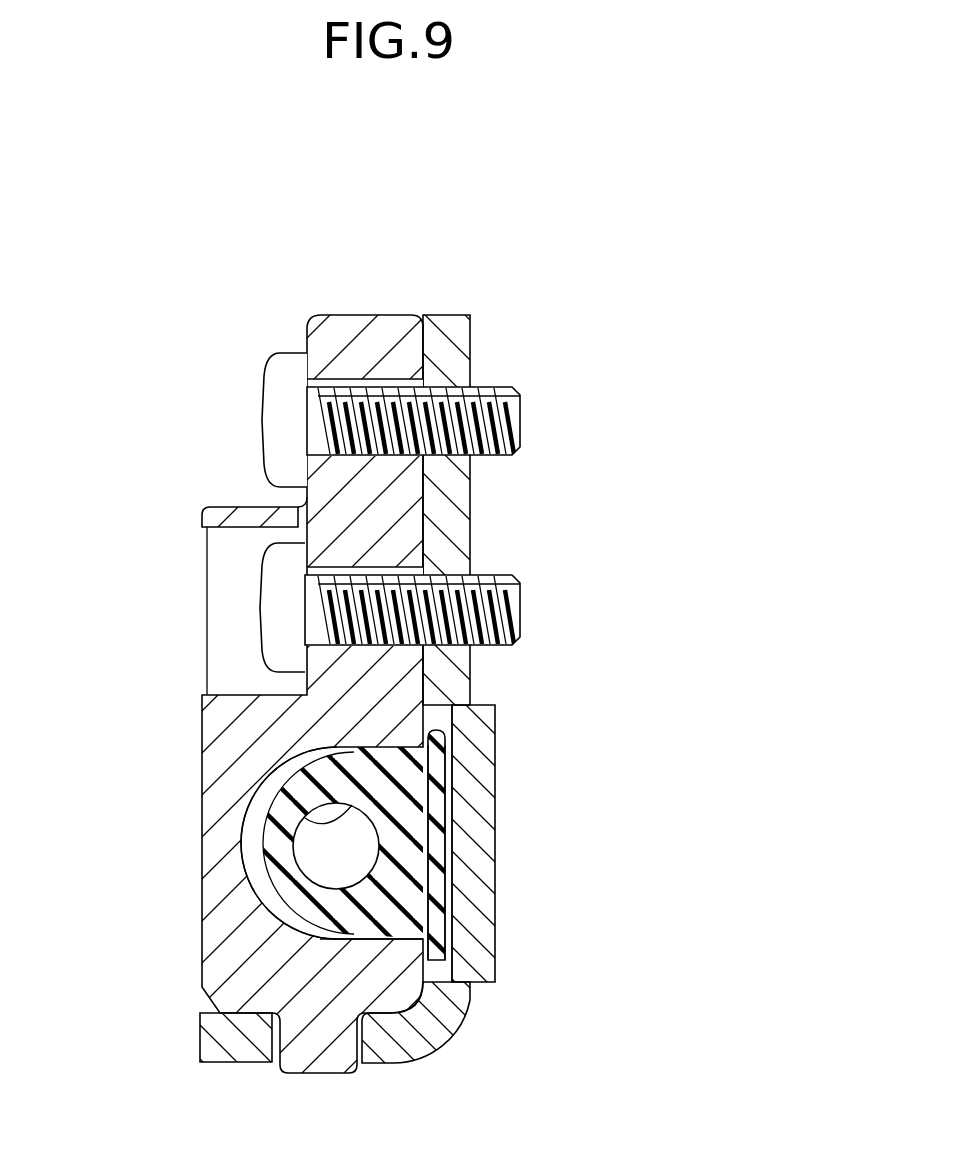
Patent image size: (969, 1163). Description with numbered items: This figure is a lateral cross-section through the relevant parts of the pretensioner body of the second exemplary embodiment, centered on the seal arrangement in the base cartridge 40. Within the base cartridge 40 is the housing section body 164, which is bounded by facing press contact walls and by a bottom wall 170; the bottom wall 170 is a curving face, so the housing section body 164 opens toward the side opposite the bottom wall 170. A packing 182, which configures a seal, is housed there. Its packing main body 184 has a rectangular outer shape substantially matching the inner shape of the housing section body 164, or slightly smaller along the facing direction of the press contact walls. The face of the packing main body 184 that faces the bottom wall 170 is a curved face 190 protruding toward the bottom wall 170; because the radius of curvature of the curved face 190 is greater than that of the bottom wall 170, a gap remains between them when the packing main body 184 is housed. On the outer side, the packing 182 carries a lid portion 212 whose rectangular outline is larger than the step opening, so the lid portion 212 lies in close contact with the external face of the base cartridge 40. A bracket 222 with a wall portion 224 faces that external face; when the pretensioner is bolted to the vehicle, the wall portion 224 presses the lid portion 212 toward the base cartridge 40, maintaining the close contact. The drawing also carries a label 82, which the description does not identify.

The base cartridge 40 is at (373, 312).
The support portion 82 is at (305, 807).
The bottom wall 170 is at (240, 820).
The curved face 190 is at (258, 853).
The packing main body 184 is at (340, 942).
The housing section body 164 is at (364, 929).
The packing 182 is at (453, 873).
The lid portion 212 is at (447, 903).
The bracket 222 is at (494, 323).
The wall portion 224 is at (497, 750).